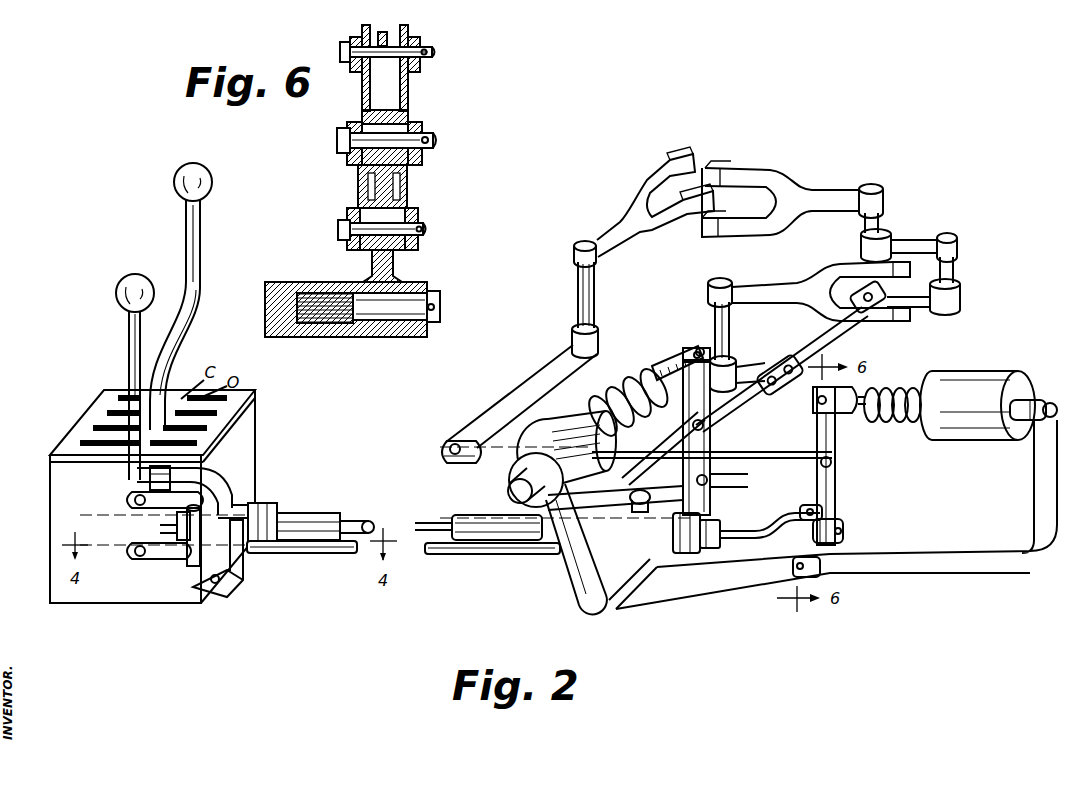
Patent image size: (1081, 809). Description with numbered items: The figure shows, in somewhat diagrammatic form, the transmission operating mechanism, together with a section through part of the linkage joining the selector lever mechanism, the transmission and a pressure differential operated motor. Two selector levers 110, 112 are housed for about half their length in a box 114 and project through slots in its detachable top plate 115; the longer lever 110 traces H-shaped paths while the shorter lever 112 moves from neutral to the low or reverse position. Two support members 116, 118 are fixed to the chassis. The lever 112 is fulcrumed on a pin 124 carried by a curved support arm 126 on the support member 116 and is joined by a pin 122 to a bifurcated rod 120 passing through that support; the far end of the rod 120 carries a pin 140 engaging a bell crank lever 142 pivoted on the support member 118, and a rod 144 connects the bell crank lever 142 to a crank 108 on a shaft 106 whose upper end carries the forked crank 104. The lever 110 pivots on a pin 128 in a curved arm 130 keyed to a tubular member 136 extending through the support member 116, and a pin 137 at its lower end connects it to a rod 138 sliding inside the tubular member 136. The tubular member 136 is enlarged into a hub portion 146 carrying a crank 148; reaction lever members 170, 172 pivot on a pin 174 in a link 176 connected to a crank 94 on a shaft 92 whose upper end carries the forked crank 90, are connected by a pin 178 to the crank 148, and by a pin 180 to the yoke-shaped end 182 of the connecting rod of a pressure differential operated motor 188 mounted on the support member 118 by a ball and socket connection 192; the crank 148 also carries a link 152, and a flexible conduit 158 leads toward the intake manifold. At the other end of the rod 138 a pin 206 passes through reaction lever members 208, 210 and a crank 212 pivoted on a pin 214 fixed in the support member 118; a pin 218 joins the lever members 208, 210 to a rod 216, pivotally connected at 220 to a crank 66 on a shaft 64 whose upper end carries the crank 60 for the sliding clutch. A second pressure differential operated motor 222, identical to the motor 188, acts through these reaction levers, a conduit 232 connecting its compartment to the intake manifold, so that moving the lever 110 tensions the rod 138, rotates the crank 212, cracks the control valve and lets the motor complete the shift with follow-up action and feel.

In FIG. 2, the crank 60 is at (606, 232).
In FIG. 2, the shaft 64 is at (576, 302).
In FIG. 2, the crank 66 is at (512, 407).
In FIG. 2, the crank 90 is at (765, 286).
In FIG. 2, the shaft 92 is at (730, 331).
In FIG. 2, the crank 94 is at (750, 369).
In FIG. 2, the crank 104 is at (815, 190).
In FIG. 2, the shaft 106 is at (960, 280).
In FIG. 2, the crank 108 is at (920, 306).
In FIG. 2, the selector lever 110 is at (200, 270).
In FIG. 2, the selector lever 112 is at (127, 352).
In FIG. 2, the box 114 is at (249, 427).
In FIG. 2, the top plate 115 is at (52, 455).
In FIG. 2, the support member 116 is at (246, 560).
In FIG. 6, the support member 118 is at (277, 286).
In FIG. 2, the support member 118 is at (637, 598).
In FIG. 2, the rod 120 is at (340, 552).
In FIG. 2, the pin 122 is at (140, 556).
In FIG. 2, the pin 124 is at (133, 502).
In FIG. 2, the curved support arm 126 is at (190, 548).
In FIG. 2, the pin 128 is at (148, 480).
In FIG. 2, the curved arm 130 is at (208, 480).
In FIG. 2, the tubular member 136 is at (300, 515).
In FIG. 2, the pin 137 is at (176, 527).
In FIG. 2, the rod 138 is at (365, 520).
In FIG. 2, the pin 140 is at (576, 582).
In FIG. 2, the bell crank lever 142 is at (650, 500).
In FIG. 2, the rod 144 is at (686, 446).
In FIG. 2, the hub portion 146 is at (722, 522).
In FIG. 2, the crank 148 is at (750, 481).
In FIG. 2, the link 152 is at (697, 348).
In FIG. 2, the flexible conduit 158 is at (644, 385).
In FIG. 2, the reaction lever member 170 is at (658, 488).
In FIG. 2, the reaction lever member 172 is at (712, 437).
In FIG. 2, the pin 174 is at (705, 424).
In FIG. 2, the link 176 is at (762, 398).
In FIG. 2, the pin 178 is at (709, 479).
In FIG. 2, the pin 180 is at (700, 348).
In FIG. 2, the yoke-shaped end 182 is at (674, 364).
In FIG. 2, the pressure differential operated motor 188 is at (565, 420).
In FIG. 2, the ball and socket connection 192 is at (1040, 424).
In FIG. 6, the pin 206 is at (425, 222).
In FIG. 2, the pin 206 is at (800, 557).
In FIG. 6, the reaction lever member 208 is at (366, 98).
In FIG. 2, the reaction lever member 208 is at (804, 507).
In FIG. 6, the reaction lever member 210 is at (406, 96).
In FIG. 2, the reaction lever member 210 is at (838, 438).
In FIG. 6, the crank 212 is at (385, 190).
In FIG. 6, the pin 214 is at (428, 294).
In FIG. 2, the pin 214 is at (845, 535).
In FIG. 2, the rod 216 is at (772, 453).
In FIG. 6, the pin 218 is at (432, 136).
In FIG. 2, the pin 218 is at (832, 464).
In FIG. 2, the pivotal connection 220 is at (450, 463).
In FIG. 2, the pressure differential operated motor 222 is at (985, 374).
In FIG. 2, the conduit 232 is at (898, 388).